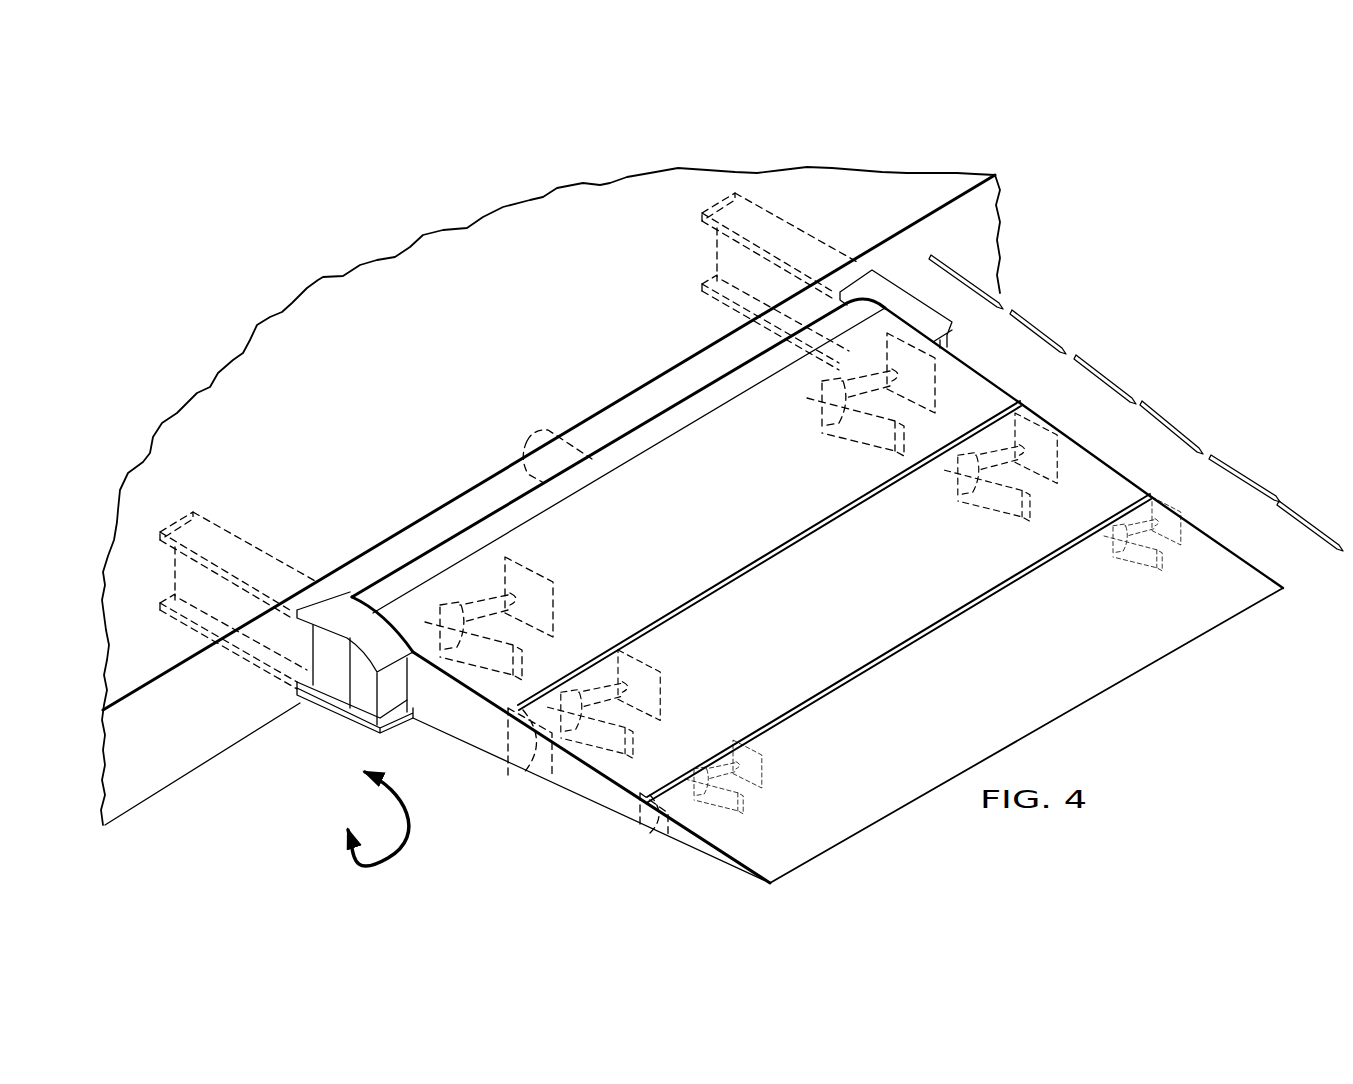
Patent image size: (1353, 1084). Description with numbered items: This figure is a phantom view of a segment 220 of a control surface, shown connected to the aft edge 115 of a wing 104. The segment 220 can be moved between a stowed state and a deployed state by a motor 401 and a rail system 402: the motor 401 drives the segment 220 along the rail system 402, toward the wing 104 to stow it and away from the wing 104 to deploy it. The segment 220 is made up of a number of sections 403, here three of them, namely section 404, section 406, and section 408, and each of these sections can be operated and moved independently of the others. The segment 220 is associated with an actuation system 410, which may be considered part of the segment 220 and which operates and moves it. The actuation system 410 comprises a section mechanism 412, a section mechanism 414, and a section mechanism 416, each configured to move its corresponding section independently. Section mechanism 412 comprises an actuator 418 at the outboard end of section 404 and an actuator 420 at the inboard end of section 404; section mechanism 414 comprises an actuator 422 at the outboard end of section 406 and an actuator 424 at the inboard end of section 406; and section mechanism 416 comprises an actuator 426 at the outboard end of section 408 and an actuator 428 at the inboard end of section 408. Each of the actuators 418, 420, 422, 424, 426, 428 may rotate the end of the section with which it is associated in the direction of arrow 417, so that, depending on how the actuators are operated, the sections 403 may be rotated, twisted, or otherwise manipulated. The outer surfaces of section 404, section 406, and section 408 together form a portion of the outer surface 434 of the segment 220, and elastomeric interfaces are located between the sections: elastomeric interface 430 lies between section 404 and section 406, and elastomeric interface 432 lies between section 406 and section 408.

The wing 104 is at (426, 371).
The aft edge 115 is at (219, 791).
The segment 220 is at (860, 828).
The motor 401 is at (527, 440).
The rail system 402 is at (340, 717).
The sections 403 is at (1136, 403).
The section 404 is at (1008, 311).
The section 406 is at (1138, 404).
The section 408 is at (1280, 504).
The actuation system 410 is at (1077, 608).
The section mechanism 412 is at (951, 372).
The section mechanism 414 is at (1068, 451).
The section mechanism 416 is at (1190, 542).
The arrow 417 is at (407, 831).
The actuator 418 is at (555, 598).
The actuator 420 is at (758, 438).
The actuator 422 is at (668, 672).
The actuator 424 is at (905, 528).
The actuator 426 is at (770, 760).
The actuator 428 is at (1097, 586).
The elastomeric interface 430 is at (766, 552).
The elastomeric interface 432 is at (890, 648).
The outer surface 434 is at (656, 432).